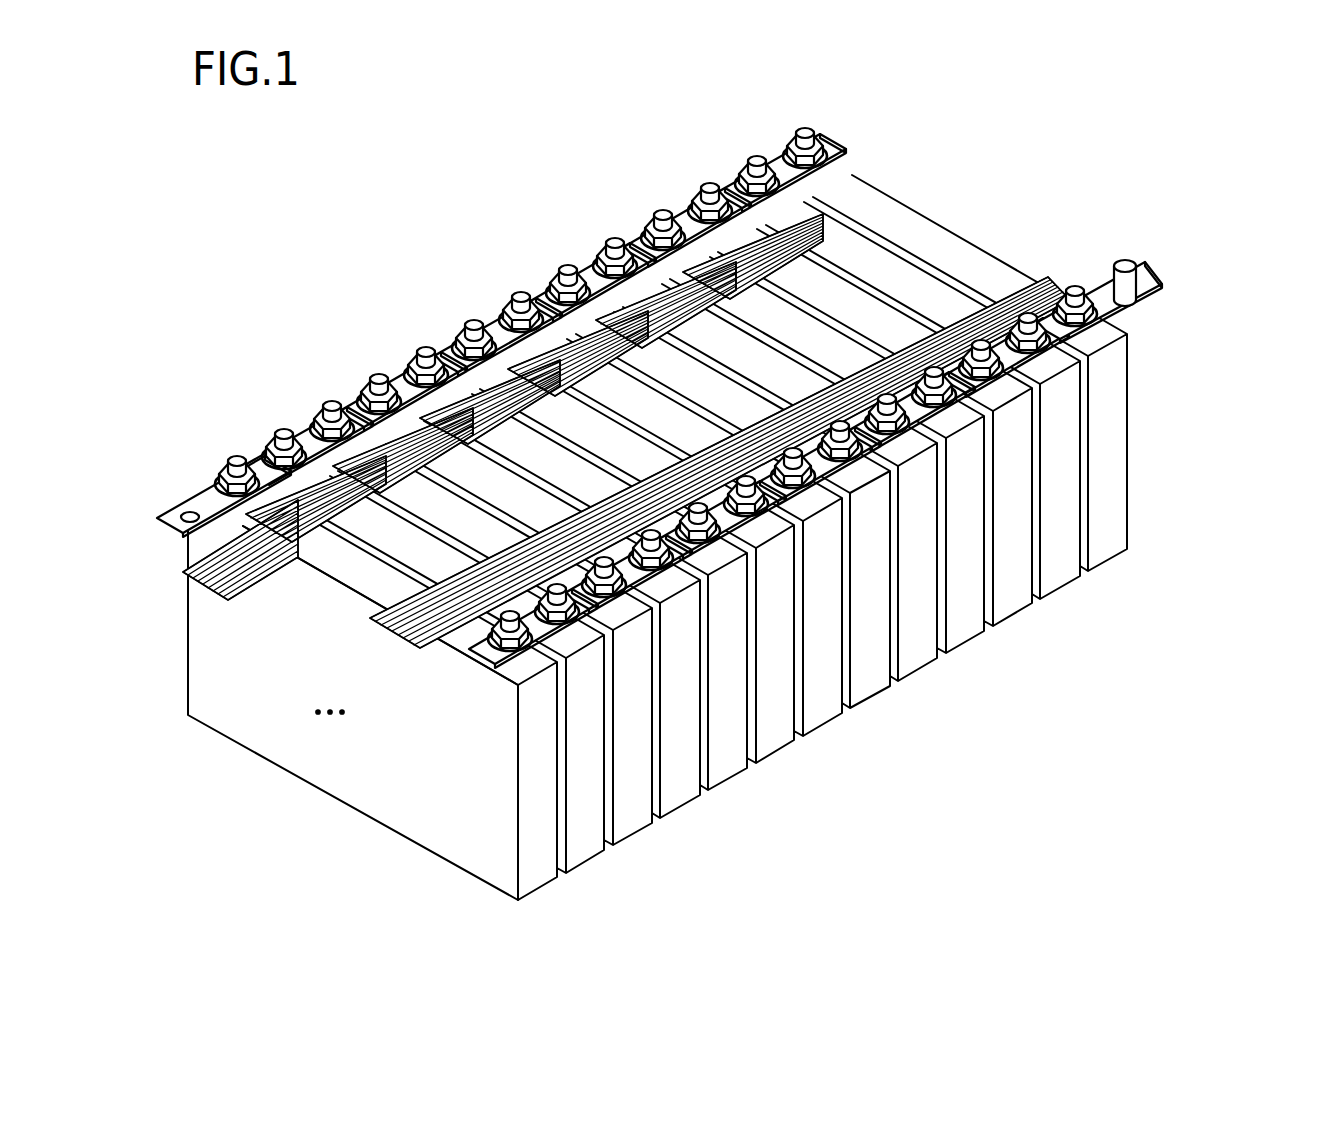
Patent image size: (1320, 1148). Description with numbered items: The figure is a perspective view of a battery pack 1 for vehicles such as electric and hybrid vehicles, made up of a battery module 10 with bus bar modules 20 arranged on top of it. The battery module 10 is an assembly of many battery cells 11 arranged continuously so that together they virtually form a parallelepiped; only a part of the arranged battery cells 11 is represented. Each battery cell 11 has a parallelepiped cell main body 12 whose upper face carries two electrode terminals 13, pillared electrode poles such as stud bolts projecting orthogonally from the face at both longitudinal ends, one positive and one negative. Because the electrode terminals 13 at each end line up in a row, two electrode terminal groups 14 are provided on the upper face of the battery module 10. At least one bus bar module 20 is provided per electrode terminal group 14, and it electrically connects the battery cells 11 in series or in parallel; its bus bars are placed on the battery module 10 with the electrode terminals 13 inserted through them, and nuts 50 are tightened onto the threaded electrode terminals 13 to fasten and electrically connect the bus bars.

The battery pack 1 is at (414, 186).
The battery module 10 is at (1175, 448).
The battery cell 11 is at (678, 562).
The cell main body 12 is at (552, 882).
The electrode terminal 13 is at (330, 400).
The electrode terminal group 14 is at (668, 365).
The bus bar module 20 is at (857, 128).
The nut 50 is at (268, 448).